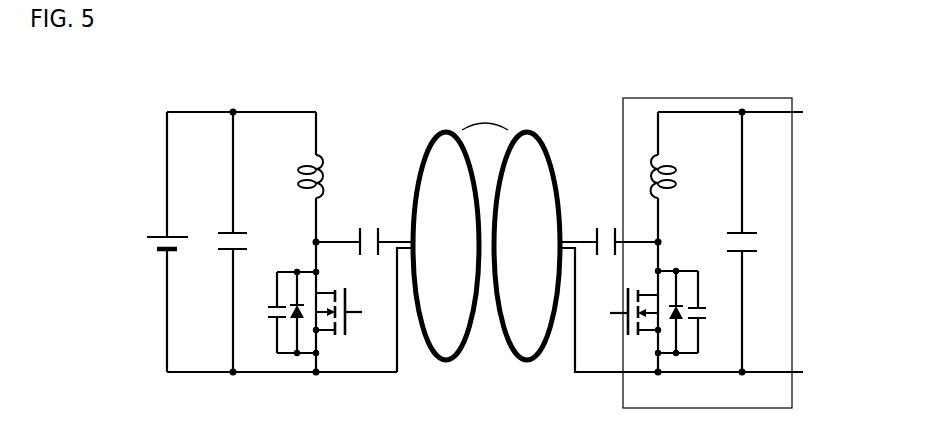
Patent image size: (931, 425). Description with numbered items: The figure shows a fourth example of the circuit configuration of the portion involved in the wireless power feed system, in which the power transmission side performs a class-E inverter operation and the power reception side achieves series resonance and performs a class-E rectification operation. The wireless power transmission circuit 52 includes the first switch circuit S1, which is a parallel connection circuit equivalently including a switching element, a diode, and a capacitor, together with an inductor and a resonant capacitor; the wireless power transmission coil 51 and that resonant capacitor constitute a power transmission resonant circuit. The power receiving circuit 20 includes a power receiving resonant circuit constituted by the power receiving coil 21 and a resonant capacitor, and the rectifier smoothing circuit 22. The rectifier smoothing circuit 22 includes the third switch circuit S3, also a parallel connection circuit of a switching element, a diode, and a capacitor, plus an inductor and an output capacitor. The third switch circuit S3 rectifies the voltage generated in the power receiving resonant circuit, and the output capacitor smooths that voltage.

The wireless power transmission circuit 52 is at (378, 88).
The power receiving circuit 20 is at (778, 88).
The rectifier smoothing circuit 22 is at (793, 98).
The wireless power transmission coil 51 is at (445, 132).
The power receiving coil 21 is at (525, 132).
The first switch circuit S1 is at (264, 358).
The third switch circuit S3 is at (597, 360).